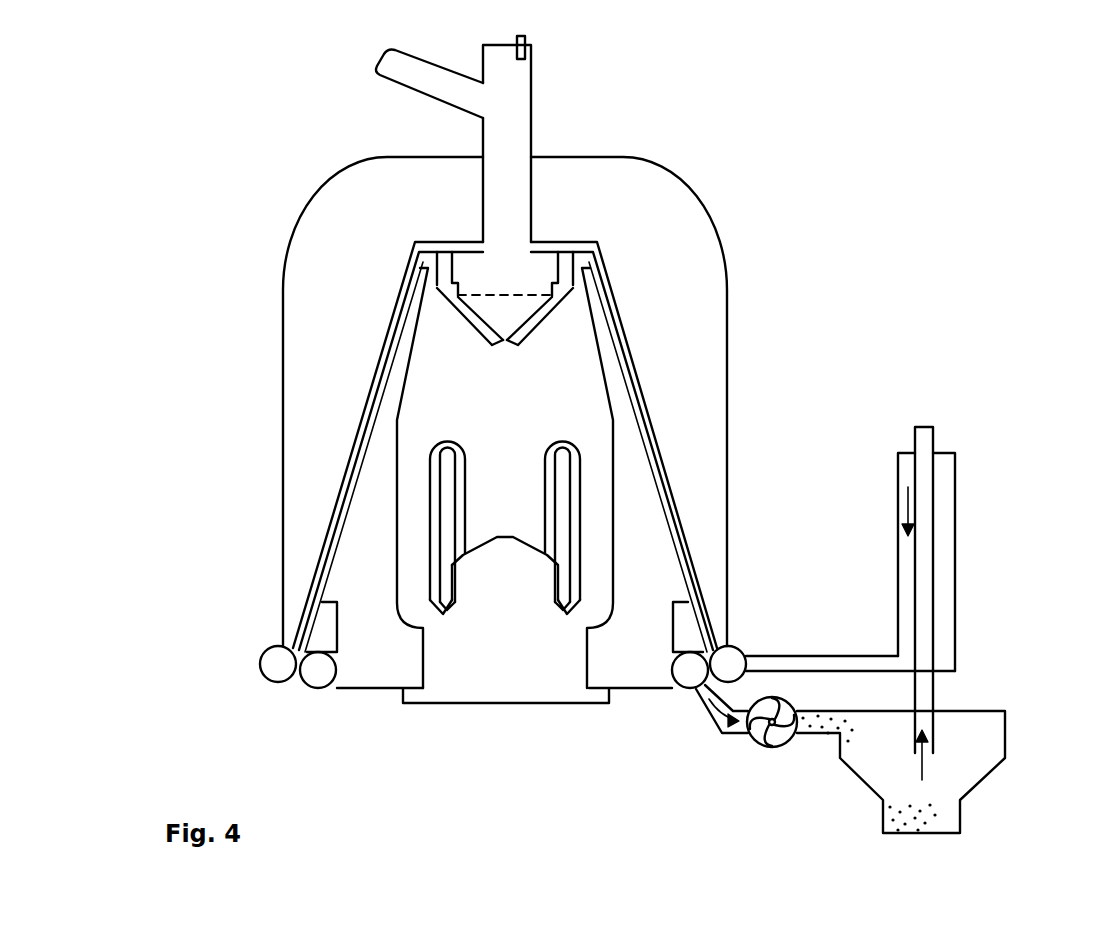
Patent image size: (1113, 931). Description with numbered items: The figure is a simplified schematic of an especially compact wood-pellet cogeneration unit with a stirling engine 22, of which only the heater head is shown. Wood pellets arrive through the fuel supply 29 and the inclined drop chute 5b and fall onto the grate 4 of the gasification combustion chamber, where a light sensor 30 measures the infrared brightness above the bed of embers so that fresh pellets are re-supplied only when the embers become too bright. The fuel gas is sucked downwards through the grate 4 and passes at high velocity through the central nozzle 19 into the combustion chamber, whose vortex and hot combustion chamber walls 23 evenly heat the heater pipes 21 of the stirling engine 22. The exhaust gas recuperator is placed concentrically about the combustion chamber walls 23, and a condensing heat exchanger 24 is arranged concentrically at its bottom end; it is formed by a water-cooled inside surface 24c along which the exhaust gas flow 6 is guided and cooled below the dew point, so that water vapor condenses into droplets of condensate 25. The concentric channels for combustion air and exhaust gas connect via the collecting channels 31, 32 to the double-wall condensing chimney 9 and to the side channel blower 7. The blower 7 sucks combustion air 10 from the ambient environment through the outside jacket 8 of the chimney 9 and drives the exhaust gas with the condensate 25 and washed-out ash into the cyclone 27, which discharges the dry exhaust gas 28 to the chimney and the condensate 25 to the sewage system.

The grate 4 is at (523, 293).
The inclined drop chute 5b is at (418, 80).
The exhaust gas flow 6 is at (711, 722).
The side channel blower 7 is at (777, 747).
The outside jacket 8 is at (947, 520).
The double-wall condensing chimney 9 is at (957, 578).
The combustion air 10 is at (900, 510).
The central nozzle 19 is at (510, 348).
The heater pipes 21 is at (585, 483).
The stirling engine 22 is at (469, 706).
The combustion chamber walls 23 is at (395, 483).
The condensing heat exchanger 24 is at (298, 643).
The water-cooled inside surface 24c is at (310, 622).
The condensate 25 is at (803, 728).
The cyclone 27 is at (1000, 735).
The dry exhaust gas 28 is at (925, 765).
The fuel supply 29 is at (518, 140).
The light sensor 30 is at (527, 52).
The collecting channel 31 is at (278, 678).
The collecting channel 32 is at (317, 682).